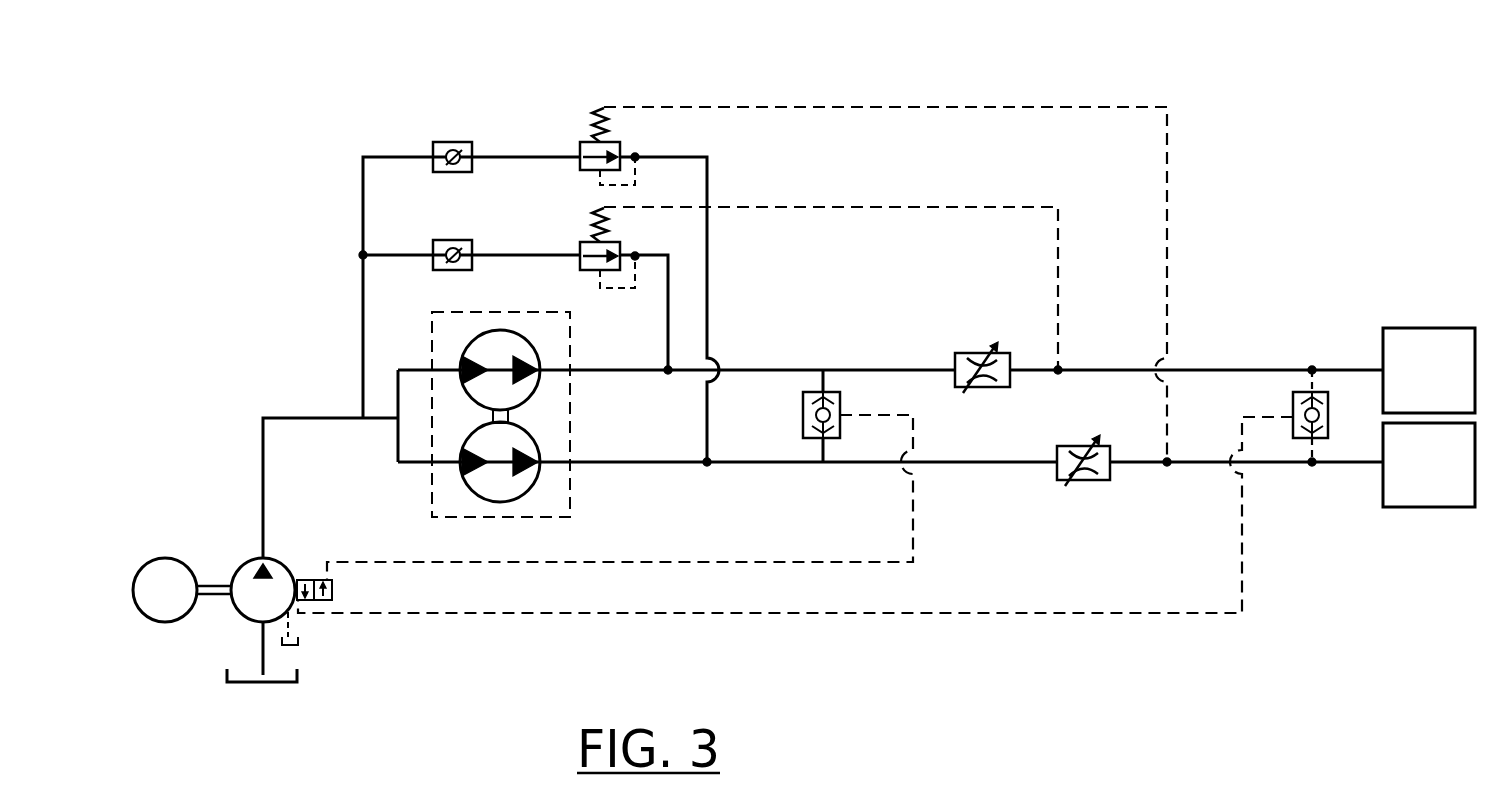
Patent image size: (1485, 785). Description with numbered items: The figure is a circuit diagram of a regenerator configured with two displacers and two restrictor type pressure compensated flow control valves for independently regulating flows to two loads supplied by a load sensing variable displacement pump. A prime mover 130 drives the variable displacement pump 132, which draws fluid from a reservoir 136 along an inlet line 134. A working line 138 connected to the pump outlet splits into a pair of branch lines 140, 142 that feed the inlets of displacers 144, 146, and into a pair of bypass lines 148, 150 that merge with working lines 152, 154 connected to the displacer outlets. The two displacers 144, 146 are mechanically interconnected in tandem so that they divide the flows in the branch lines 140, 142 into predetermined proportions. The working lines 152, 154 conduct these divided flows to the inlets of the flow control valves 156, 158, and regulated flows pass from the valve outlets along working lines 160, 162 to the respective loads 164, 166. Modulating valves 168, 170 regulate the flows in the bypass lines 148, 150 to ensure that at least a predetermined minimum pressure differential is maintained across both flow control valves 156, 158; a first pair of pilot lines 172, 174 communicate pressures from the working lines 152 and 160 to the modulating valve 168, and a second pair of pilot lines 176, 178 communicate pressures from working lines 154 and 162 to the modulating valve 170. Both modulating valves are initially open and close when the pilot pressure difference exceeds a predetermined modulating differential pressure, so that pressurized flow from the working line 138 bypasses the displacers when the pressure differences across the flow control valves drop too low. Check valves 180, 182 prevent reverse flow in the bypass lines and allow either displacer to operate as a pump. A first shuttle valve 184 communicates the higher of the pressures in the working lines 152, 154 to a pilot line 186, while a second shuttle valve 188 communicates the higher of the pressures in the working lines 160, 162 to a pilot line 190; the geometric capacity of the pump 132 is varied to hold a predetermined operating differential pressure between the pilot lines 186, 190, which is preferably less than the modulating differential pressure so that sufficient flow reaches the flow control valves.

The prime mover 130 is at (154, 560).
The load sensing variable displacement pump 132 is at (275, 561).
The inlet line 134 is at (260, 648).
The reservoir 136 is at (281, 676).
The working line 138 is at (263, 472).
The branch line 140 is at (428, 368).
The branch line 142 is at (405, 463).
The displacer 144 is at (480, 330).
The displacer 146 is at (472, 490).
The bypass line 148 is at (402, 257).
The bypass line 150 is at (400, 157).
The working line 152 is at (745, 370).
The working line 154 is at (598, 463).
The adjustable restrictor type pressure compensated flow control valve 156 is at (1002, 352).
The adjustable restrictor type pressure compensated flow control valve 158 is at (1090, 481).
The working line 160 is at (1285, 369).
The working line 162 is at (1263, 463).
The load 164 is at (1467, 328).
The load 166 is at (1420, 507).
The modulating valve 168 is at (580, 243).
The modulating valve 170 is at (580, 152).
The pilot line 172 is at (601, 288).
The pilot line 174 is at (845, 207).
The pilot line 176 is at (600, 183).
The pilot line 178 is at (977, 105).
The check valve 180 is at (452, 240).
The check valve 182 is at (452, 142).
The first shuttle valve 184 is at (803, 427).
The pilot line 186 is at (913, 521).
The second shuttle valve 188 is at (1328, 428).
The pilot line 190 is at (1045, 613).